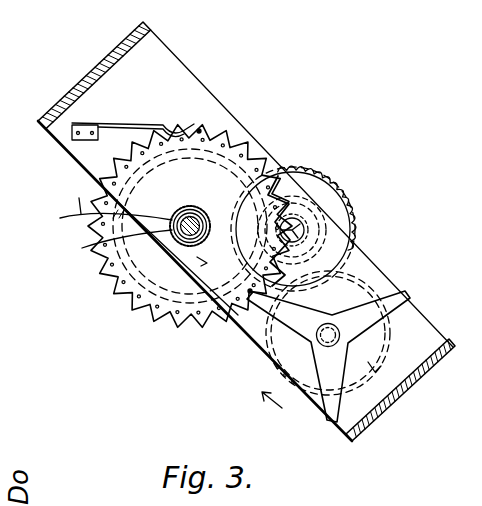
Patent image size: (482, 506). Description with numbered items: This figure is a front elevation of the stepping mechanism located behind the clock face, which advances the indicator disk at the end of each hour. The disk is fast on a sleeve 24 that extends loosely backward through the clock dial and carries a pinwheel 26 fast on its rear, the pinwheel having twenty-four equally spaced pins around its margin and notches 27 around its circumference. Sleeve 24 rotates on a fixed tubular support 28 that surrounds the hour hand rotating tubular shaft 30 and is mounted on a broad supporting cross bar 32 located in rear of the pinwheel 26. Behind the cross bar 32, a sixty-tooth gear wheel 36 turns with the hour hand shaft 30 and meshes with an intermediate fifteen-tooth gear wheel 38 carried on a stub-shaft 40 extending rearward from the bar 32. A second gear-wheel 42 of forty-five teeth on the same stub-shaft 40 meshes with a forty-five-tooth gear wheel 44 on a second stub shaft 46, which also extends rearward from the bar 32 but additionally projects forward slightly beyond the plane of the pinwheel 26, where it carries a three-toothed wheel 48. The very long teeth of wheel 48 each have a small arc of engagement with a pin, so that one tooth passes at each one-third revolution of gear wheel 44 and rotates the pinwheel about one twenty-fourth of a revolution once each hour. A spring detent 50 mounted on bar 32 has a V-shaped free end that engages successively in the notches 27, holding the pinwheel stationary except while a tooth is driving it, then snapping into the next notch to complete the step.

The sleeve 24 is at (170, 246).
The pinwheel 26 is at (242, 129).
The notches 27 is at (203, 130).
The fixed tubular support 28 is at (190, 247).
The hour hand rotating tubular shaft 30 is at (109, 230).
The supporting cross bar 32 is at (165, 69).
The gear wheel 36 is at (270, 150).
The intermediate gear wheel 38 is at (326, 183).
The stub-shaft 40 is at (300, 237).
The second gear-wheel 42 is at (325, 203).
The gear wheel 44 is at (410, 381).
The second stub shaft 46 is at (340, 338).
The three-toothed wheel 48 is at (320, 372).
The spring detent 50 is at (170, 126).